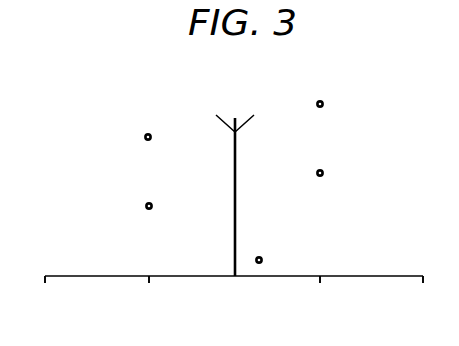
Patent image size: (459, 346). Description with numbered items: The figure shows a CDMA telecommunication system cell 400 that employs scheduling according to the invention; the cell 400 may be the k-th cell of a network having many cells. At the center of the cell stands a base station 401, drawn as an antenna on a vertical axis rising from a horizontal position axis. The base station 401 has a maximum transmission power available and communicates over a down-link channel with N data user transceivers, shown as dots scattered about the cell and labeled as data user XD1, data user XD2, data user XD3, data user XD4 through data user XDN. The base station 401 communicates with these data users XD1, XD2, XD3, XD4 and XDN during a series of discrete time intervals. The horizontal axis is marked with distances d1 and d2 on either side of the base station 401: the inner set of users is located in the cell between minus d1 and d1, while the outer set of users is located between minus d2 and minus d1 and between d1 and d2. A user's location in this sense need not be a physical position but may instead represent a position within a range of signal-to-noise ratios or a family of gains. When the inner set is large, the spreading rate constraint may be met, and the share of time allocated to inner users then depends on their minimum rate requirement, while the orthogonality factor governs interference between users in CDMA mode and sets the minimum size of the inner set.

The CDMA telecommunication system cell 400 is at (392, 105).
The base station 401 is at (236, 187).
The data user transceiver XD1 is at (320, 190).
The data user transceiver XD2 is at (278, 253).
The data user transceiver XD3 is at (148, 224).
The data user transceiver XD4 is at (148, 156).
The data user transceiver XDN is at (321, 123).
The inner set boundary distance d1 is at (234, 302).
The outer set boundary distance d2 is at (234, 301).